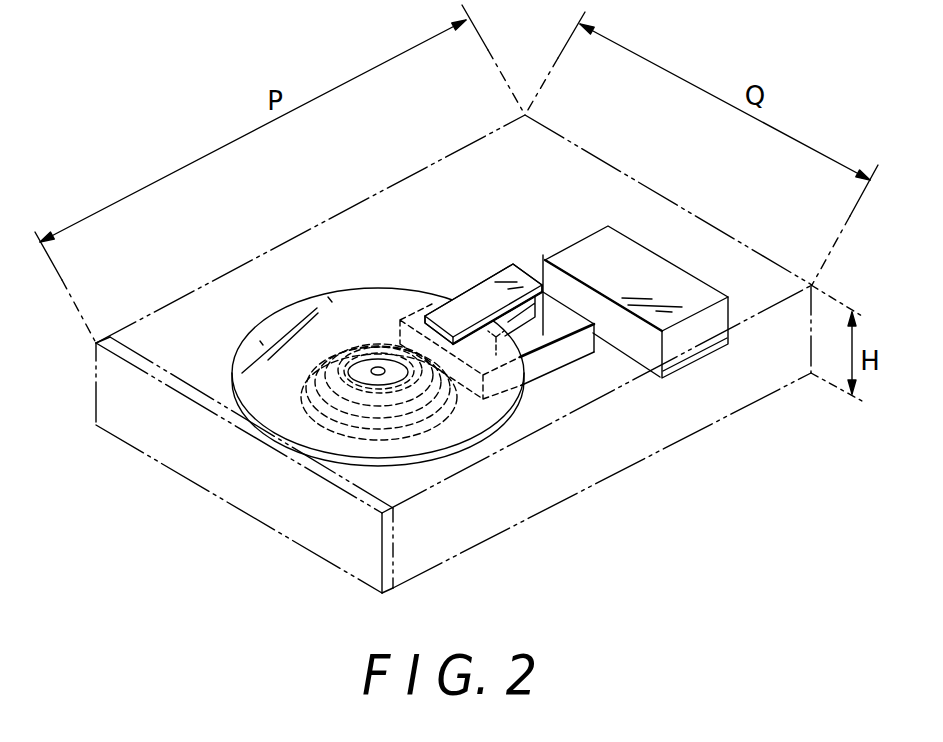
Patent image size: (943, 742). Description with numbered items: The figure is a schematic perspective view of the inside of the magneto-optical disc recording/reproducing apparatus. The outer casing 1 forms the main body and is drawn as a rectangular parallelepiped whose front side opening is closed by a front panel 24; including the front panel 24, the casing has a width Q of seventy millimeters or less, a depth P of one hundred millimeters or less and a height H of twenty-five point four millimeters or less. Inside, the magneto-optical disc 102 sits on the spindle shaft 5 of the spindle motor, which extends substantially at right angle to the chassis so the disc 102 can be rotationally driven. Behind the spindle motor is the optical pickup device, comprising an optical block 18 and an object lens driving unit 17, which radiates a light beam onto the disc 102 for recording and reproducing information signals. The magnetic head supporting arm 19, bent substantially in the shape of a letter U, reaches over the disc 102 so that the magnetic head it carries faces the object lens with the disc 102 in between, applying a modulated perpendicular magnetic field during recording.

The outer casing 1 is at (584, 503).
The front panel 24 is at (390, 562).
The magneto-optical disc 102 is at (382, 298).
The spindle shaft 5 is at (370, 363).
The magnetic head supporting arm 19 is at (515, 278).
The object lens driving unit 17 is at (570, 352).
The optical block 18 is at (645, 267).